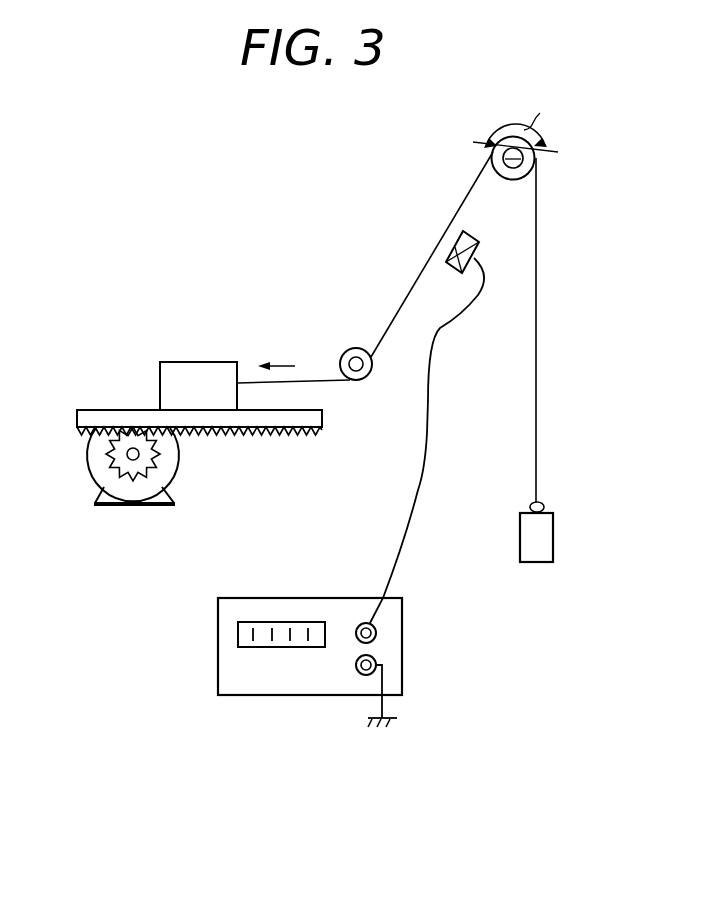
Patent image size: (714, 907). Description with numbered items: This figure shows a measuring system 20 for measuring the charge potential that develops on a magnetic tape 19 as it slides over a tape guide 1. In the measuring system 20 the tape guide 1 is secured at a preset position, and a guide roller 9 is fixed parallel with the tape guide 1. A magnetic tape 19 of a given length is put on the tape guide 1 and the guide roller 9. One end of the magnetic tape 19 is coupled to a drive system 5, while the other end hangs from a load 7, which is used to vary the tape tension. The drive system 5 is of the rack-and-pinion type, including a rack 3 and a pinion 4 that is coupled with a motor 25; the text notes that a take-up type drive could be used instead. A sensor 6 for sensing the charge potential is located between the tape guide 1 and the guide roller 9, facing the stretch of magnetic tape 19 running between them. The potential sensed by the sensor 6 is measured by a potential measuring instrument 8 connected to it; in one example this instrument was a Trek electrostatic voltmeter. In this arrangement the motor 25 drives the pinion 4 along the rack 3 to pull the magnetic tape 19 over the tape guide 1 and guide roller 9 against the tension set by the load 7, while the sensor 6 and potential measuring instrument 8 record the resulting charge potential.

The tape guide 1 is at (509, 186).
The rack 3 is at (263, 420).
The pinion 4 is at (103, 467).
The drive system 5 is at (139, 509).
The sensor 6 is at (448, 254).
The load 7 is at (555, 530).
The potential measuring instrument 8 is at (277, 672).
The guide roller 9 is at (356, 348).
The magnetic tape 19 is at (538, 330).
The measuring system 20 is at (462, 146).
The motor 25 is at (165, 470).